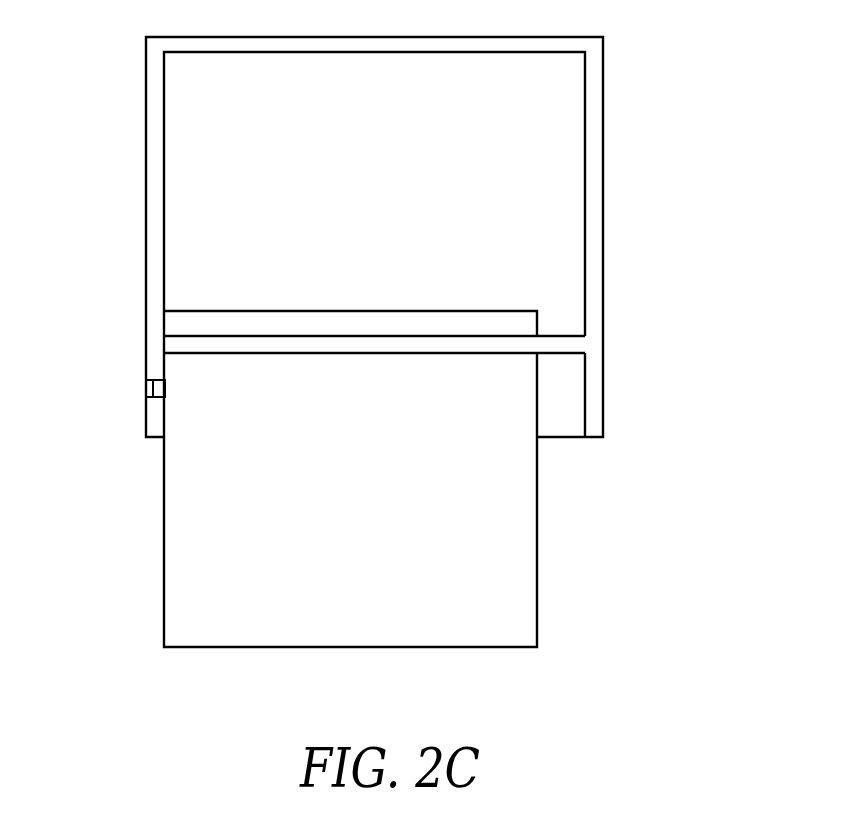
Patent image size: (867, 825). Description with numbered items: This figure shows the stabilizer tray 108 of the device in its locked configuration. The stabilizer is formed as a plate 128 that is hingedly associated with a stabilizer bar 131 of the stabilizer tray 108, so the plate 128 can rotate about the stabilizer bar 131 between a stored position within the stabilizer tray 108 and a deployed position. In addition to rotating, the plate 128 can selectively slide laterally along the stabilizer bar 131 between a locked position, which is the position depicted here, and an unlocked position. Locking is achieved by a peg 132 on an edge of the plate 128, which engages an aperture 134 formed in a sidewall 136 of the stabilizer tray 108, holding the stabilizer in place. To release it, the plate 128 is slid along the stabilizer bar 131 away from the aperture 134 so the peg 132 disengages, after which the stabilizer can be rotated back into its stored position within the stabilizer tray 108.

The stabilizer tray 108 is at (378, 185).
The plate 128 is at (381, 513).
The stabilizer bar 131 is at (560, 333).
The peg 132 is at (147, 388).
The aperture 134 is at (172, 390).
The sidewall 136 is at (603, 186).